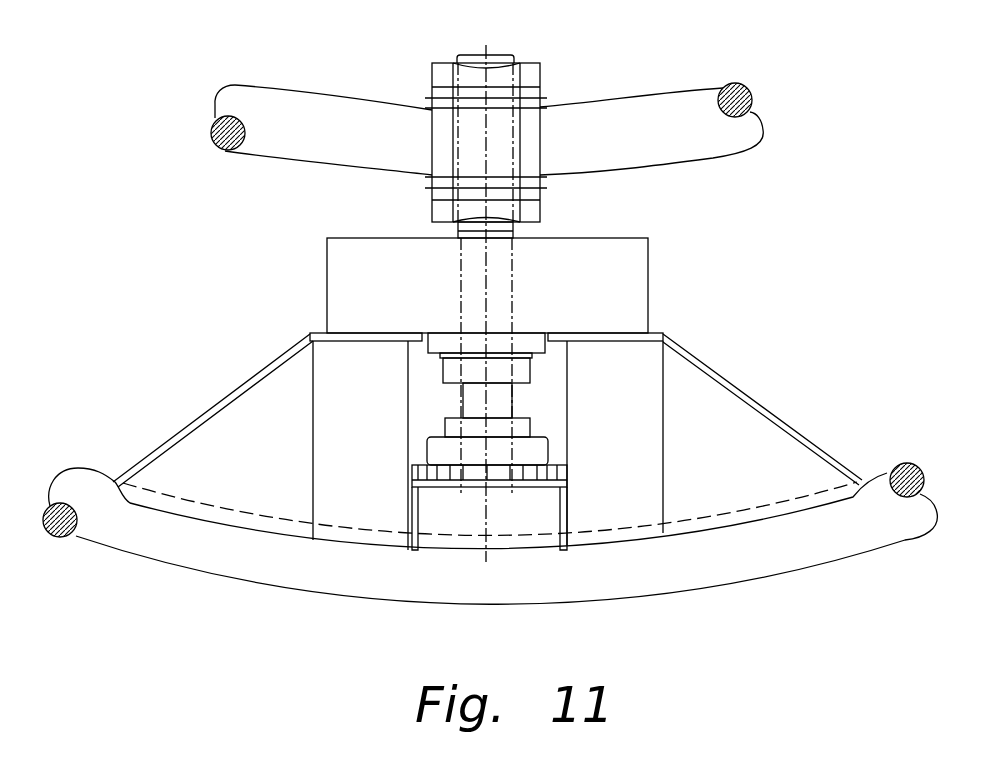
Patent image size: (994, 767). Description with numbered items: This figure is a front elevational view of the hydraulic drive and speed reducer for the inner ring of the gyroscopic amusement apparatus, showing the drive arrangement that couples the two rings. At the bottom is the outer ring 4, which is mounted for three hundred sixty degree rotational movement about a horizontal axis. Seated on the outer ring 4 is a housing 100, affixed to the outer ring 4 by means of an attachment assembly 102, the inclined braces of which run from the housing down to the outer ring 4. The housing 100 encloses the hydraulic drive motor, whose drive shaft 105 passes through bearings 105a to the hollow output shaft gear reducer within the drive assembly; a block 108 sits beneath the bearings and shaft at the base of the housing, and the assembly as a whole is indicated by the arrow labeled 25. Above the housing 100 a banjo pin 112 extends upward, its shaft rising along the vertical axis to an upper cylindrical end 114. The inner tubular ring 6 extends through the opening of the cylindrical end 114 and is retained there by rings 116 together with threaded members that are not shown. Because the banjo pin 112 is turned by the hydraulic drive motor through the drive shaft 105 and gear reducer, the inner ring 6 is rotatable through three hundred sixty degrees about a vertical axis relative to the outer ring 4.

The outer ring 4 is at (297, 570).
The inner tubular ring 6 is at (660, 110).
The drive assembly 25 is at (307, 280).
The housing 100 is at (612, 502).
The attachment assembly 102 is at (715, 483).
The drive shaft 105 is at (463, 405).
The bearings 105a is at (529, 375).
The base block 108 is at (545, 457).
The banjo pin 112 is at (510, 231).
The upper cylindrical end 114 is at (495, 54).
The rings 116 is at (533, 95).